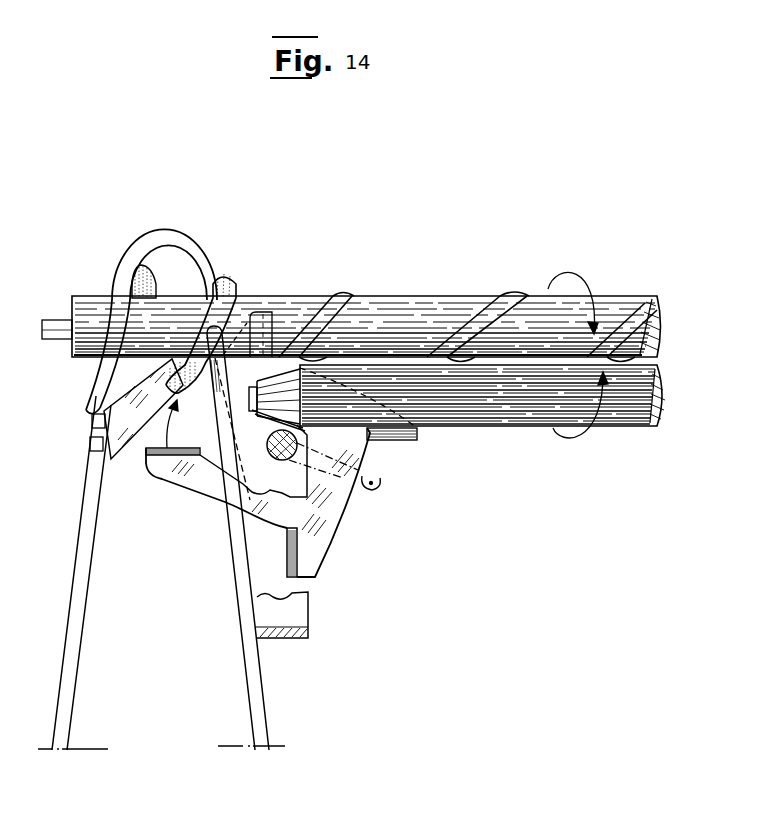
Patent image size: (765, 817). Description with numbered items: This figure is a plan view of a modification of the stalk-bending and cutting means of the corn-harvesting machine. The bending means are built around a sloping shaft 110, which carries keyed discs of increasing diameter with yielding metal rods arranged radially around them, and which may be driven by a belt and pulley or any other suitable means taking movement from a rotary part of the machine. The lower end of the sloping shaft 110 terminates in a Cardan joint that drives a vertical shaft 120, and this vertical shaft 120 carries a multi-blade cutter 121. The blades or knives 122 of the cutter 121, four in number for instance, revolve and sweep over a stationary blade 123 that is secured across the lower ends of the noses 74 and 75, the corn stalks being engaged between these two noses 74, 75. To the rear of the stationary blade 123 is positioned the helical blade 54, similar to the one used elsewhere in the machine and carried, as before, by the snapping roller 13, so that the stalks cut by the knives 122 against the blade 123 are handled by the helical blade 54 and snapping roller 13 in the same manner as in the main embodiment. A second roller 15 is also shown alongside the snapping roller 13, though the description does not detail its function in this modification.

The snapping roller 13 is at (437, 312).
The cylindrical roller shaft 15 is at (614, 413).
The helical blade 54 is at (143, 296).
The nose 74 is at (63, 710).
The nose 75 is at (257, 714).
The sloping shaft 110 is at (370, 478).
The vertical shaft 120 is at (265, 450).
The multi-blade cutter 121 is at (325, 528).
The blades or knives 122 is at (290, 562).
The blade 123 is at (142, 393).